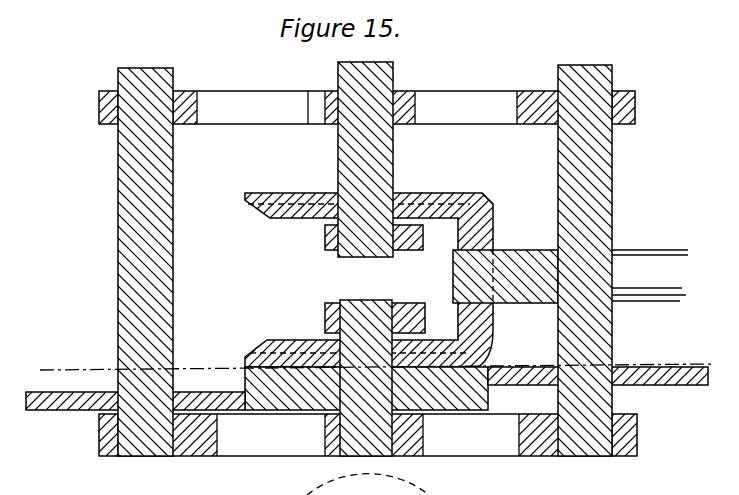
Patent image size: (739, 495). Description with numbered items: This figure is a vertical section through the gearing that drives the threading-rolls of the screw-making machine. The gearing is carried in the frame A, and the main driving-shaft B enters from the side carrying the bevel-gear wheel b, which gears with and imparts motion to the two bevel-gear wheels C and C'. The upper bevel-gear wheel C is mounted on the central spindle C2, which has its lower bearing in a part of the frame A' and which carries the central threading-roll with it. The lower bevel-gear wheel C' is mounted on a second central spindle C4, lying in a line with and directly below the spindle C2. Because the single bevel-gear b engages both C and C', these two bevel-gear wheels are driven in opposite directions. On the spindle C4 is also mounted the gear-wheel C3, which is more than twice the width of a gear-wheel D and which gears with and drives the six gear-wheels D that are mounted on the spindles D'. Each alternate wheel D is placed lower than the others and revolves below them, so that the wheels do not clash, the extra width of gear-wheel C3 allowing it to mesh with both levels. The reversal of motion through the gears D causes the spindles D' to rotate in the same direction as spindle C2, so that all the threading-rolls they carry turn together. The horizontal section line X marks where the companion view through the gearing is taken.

The frame A is at (368, 435).
The part of the frame A' is at (367, 171).
The main driving-shaft B is at (570, 276).
The bevel-gear wheel C is at (369, 223).
The bevel-gear wheel C' is at (369, 308).
The central spindle C2 is at (379, 159).
The gear-wheel C3 is at (366, 388).
The central spindle C4 is at (375, 378).
The gear-wheel D is at (367, 376).
The spindle D' is at (365, 260).
The bevel-gear wheel b is at (496, 215).
The section line X is at (373, 367).